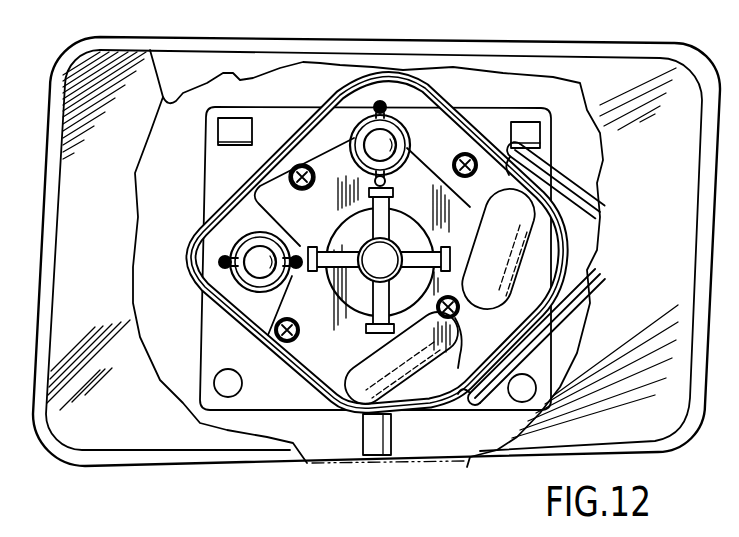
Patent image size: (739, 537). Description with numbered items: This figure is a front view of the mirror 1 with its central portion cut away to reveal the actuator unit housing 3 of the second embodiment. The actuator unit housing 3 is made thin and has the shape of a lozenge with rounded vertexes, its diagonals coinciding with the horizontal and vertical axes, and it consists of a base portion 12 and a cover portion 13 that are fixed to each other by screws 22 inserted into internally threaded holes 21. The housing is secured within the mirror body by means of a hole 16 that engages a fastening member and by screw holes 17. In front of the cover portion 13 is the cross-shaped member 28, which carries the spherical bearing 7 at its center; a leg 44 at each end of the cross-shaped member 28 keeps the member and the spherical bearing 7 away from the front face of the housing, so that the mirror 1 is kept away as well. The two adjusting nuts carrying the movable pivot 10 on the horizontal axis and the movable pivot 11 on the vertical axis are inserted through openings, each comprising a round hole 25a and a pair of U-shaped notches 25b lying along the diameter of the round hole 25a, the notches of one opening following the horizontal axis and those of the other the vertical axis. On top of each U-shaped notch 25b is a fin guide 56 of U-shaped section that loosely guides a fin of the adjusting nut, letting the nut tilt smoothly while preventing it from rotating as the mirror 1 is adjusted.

The mirror 1 is at (617, 72).
The actuator unit housing 3 is at (180, 238).
The spherical bearing 7 is at (387, 250).
The movable pivot 10 is at (258, 268).
The movable pivot 11 is at (353, 137).
The base portion 12 is at (217, 156).
The cover portion 13 is at (411, 398).
The hole 16 is at (523, 121).
The screw hole 17 is at (213, 382).
The internally threaded hole 21 is at (292, 181).
The screw 22 is at (302, 188).
The round hole 25a is at (402, 142).
The U-shaped notch 25b is at (388, 110).
The cross-shaped member 28 is at (333, 280).
The leg 44 is at (372, 328).
The fin guide 56 is at (228, 254).